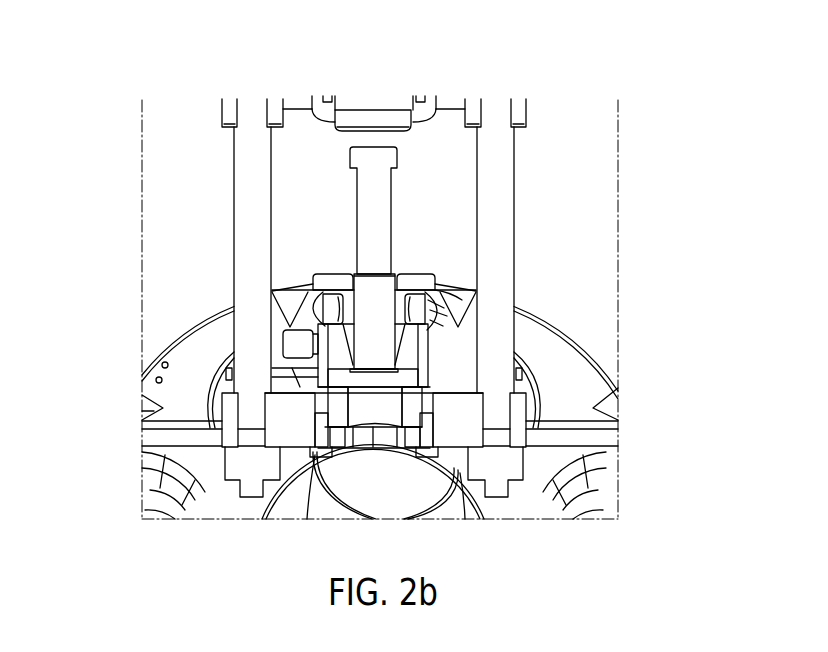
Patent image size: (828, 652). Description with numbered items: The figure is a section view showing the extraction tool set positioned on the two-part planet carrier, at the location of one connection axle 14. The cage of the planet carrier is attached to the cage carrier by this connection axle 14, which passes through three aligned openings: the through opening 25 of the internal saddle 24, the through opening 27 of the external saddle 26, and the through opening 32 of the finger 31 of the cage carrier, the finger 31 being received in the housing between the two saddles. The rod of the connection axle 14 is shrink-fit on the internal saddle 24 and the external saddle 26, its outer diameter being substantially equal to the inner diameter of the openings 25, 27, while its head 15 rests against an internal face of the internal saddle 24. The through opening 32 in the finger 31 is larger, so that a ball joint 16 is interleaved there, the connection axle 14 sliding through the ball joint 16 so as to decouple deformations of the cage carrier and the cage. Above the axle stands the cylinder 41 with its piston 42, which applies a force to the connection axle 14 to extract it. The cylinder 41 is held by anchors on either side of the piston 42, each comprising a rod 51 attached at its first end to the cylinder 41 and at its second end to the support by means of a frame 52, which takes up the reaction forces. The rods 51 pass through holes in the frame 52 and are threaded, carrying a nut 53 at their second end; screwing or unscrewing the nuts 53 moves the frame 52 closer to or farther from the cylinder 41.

The connection axle 14 is at (372, 314).
The head 15 is at (420, 368).
The ball joint 16 is at (440, 292).
The internal saddle 24 is at (393, 344).
The through opening 25 is at (346, 315).
The external saddle 26 is at (333, 279).
The through opening 27 is at (391, 271).
The finger 31 is at (272, 290).
The through opening 32 is at (403, 290).
The cylinder 41 is at (372, 115).
The piston 42 is at (378, 172).
The rod 51 is at (245, 158).
The frame 52 is at (297, 415).
The nut 53 is at (240, 478).